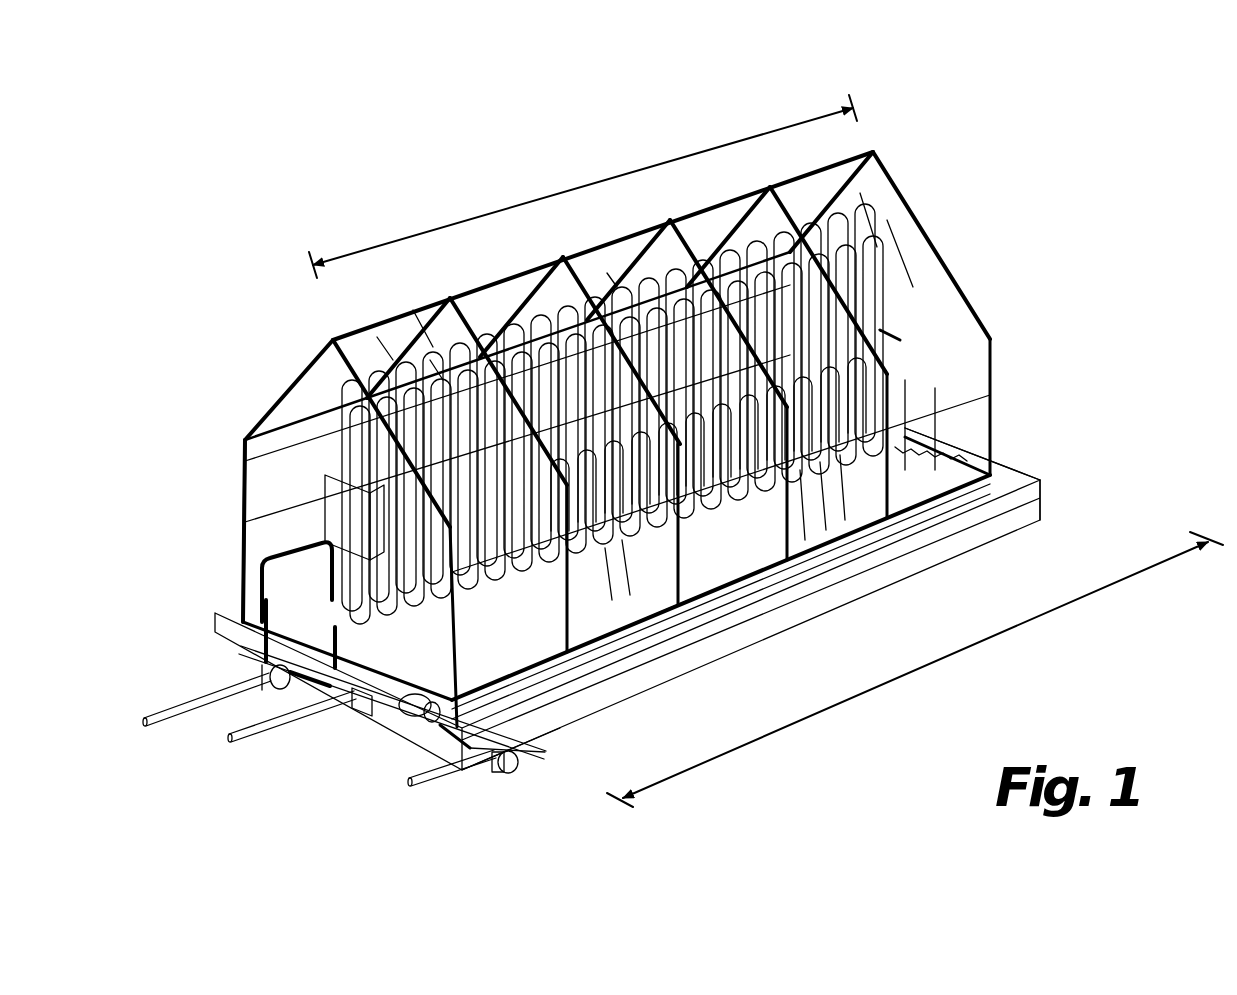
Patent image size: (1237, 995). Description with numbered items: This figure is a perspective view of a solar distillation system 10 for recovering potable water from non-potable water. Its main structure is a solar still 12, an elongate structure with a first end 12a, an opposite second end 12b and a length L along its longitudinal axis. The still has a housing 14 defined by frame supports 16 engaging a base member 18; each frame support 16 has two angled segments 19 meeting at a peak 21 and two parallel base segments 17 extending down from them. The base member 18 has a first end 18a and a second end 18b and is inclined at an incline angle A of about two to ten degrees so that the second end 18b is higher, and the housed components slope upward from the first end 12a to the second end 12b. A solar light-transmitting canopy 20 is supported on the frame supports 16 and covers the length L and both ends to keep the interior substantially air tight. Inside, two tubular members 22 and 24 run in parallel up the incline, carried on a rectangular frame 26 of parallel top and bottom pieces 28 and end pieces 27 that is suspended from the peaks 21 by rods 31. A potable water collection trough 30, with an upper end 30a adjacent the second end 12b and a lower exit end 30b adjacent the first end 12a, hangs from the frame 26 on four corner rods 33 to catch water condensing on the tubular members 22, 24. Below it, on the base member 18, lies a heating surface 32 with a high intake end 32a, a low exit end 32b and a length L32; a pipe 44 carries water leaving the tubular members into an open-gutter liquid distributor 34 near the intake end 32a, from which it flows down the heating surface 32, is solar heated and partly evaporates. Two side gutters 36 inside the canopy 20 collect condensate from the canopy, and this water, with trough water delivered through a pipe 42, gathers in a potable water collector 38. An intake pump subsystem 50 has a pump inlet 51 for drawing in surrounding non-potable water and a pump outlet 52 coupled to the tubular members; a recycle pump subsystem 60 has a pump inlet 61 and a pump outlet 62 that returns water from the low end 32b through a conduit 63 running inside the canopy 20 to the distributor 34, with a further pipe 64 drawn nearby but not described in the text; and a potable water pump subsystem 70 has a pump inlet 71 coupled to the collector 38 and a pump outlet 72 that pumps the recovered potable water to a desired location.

The solar distillation system 10 is at (869, 66).
The solar still 12 is at (803, 106).
The first end 12a is at (230, 212).
The second end 12b is at (1014, 134).
The housing 14 is at (871, 137).
The frame supports 16 is at (958, 262).
The base segments 17 is at (992, 398).
The base member 18 is at (1015, 530).
The first end of base member 18a is at (507, 742).
The second end of base member 18b is at (1045, 494).
The angled segments 19 is at (912, 210).
The canopy 20 is at (997, 443).
The peak 21 is at (876, 152).
The tubular member 22 is at (513, 316).
The tubular member 24 is at (563, 272).
The frame 26 is at (337, 496).
The end pieces 27 is at (340, 527).
The top and bottom pieces 28 is at (258, 443).
The potable water collection trough 30 is at (524, 583).
The upper end of trough 30a is at (990, 352).
The lower exit end of trough 30b is at (345, 628).
The rods 31 is at (878, 188).
The heating surface 32 is at (717, 553).
The high intake end of heating surface 32a is at (930, 475).
The low exit end of heating surface 32b is at (360, 672).
The corner rods 33 is at (368, 607).
The liquid distributor 34 is at (930, 462).
The side gutters 36 is at (1042, 466).
The potable water collector 38 is at (440, 737).
The pipe 42 is at (325, 674).
The pipe 44 is at (897, 338).
The intake pump subsystem 50 is at (230, 677).
The pump inlet 51 is at (163, 724).
The pump outlet 52 is at (260, 657).
The recycle pump subsystem 60 is at (365, 750).
The pump inlet 61 is at (358, 712).
The coupling 62 is at (432, 696).
The conduit 63 is at (612, 632).
The pipe 64 is at (245, 740).
The potable water pump subsystem 70 is at (503, 782).
The pump inlet 71 is at (460, 754).
The pump outlet 72 is at (445, 790).
The incline angle A is at (723, 622).
The length L is at (572, 190).
The length of heating surface L32 is at (902, 673).